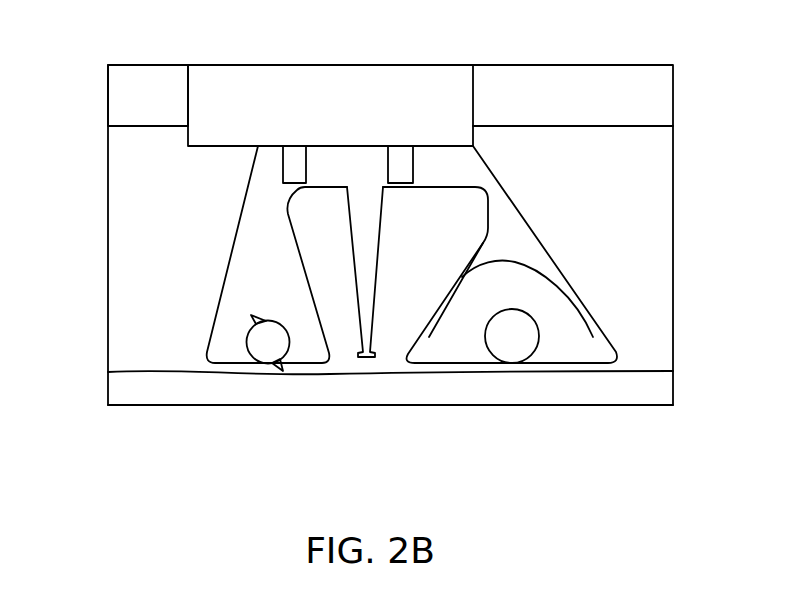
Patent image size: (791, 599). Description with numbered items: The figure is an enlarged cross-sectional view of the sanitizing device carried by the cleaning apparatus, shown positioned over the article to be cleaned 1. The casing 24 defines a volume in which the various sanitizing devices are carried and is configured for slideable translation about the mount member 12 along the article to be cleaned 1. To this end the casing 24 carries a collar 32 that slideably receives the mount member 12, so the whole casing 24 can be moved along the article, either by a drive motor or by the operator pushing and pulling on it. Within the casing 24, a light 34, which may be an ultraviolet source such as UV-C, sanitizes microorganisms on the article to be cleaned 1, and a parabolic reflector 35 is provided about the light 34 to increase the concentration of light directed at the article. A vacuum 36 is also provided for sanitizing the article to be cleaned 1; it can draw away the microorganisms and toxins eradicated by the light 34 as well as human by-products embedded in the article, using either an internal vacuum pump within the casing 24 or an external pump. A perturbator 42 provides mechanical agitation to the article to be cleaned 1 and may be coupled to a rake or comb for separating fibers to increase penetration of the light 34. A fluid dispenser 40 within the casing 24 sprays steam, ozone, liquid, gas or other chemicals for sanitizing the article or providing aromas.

The article to be cleaned 1 is at (652, 395).
The mount member 12 is at (148, 88).
The casing 24 is at (465, 177).
The collar 32 is at (257, 92).
The light 34 is at (550, 317).
The parabolic reflector 35 is at (545, 268).
The vacuum 36 is at (228, 323).
The fluid dispenser 40 is at (357, 283).
The perturbator 42 is at (253, 358).